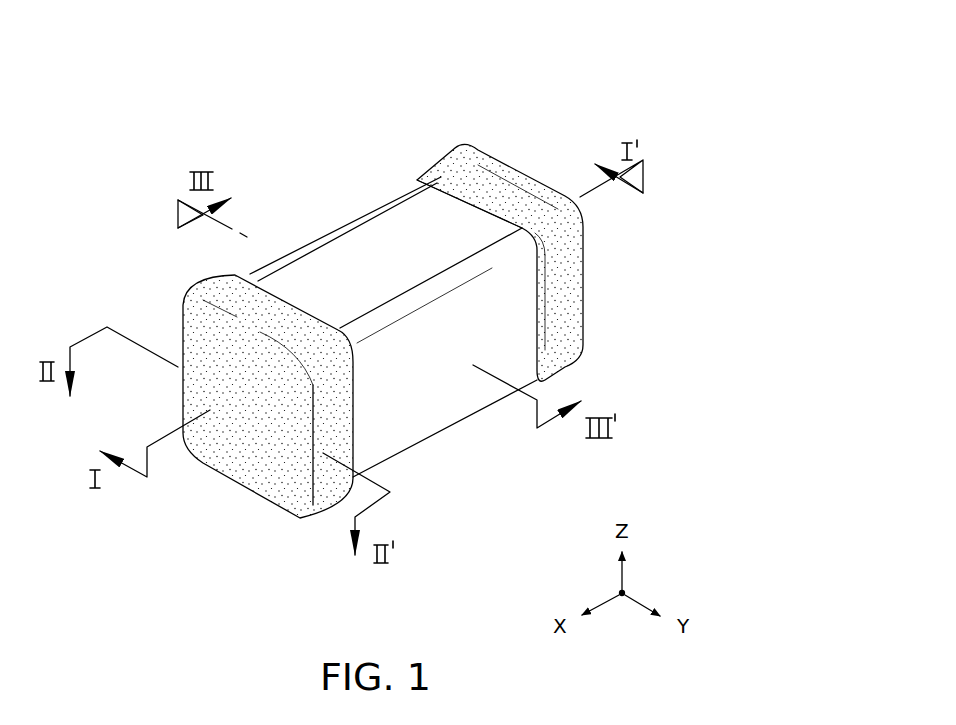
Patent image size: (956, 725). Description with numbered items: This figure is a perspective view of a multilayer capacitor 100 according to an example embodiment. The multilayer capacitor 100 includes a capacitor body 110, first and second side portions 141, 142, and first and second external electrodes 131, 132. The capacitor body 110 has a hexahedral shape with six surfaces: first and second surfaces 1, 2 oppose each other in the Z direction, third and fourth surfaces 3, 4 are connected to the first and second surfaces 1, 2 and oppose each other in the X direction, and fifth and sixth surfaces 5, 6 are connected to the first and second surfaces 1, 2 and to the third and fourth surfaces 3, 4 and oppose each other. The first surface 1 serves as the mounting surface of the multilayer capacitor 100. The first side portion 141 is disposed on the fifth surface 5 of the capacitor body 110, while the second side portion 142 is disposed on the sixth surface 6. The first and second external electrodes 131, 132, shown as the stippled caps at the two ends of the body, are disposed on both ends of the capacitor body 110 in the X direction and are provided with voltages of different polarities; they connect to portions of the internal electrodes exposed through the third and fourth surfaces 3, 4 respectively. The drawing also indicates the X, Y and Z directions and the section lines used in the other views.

The multilayer capacitor 100 is at (315, 23).
The capacitor body 110 is at (396, 230).
The first surface 1 is at (390, 409).
The second surface 2 is at (370, 240).
The third surface 3 is at (246, 435).
The fourth surface 4 is at (512, 186).
The fifth surface 5 is at (440, 403).
The sixth surface 6 is at (331, 264).
The first external electrode 131 is at (267, 480).
The second external electrode 132 is at (563, 327).
The first side portion 141 is at (487, 254).
The second side portion 142 is at (414, 181).